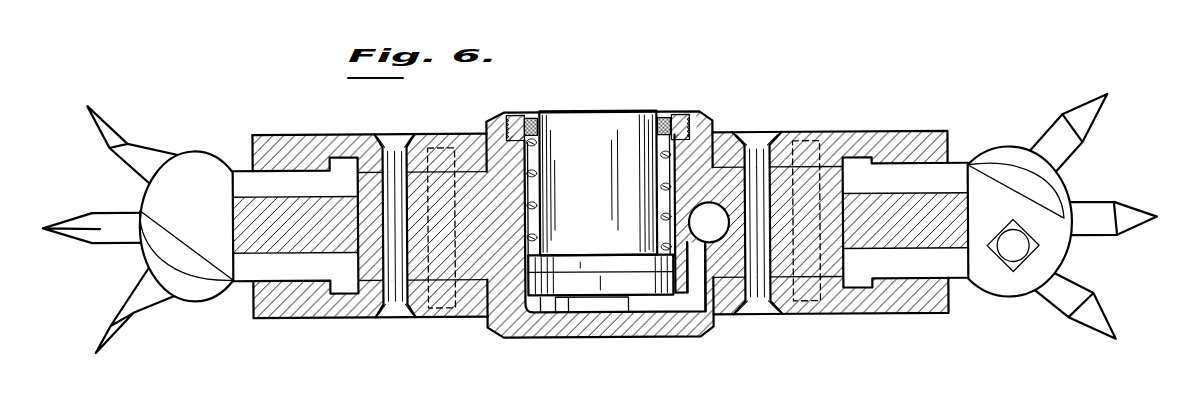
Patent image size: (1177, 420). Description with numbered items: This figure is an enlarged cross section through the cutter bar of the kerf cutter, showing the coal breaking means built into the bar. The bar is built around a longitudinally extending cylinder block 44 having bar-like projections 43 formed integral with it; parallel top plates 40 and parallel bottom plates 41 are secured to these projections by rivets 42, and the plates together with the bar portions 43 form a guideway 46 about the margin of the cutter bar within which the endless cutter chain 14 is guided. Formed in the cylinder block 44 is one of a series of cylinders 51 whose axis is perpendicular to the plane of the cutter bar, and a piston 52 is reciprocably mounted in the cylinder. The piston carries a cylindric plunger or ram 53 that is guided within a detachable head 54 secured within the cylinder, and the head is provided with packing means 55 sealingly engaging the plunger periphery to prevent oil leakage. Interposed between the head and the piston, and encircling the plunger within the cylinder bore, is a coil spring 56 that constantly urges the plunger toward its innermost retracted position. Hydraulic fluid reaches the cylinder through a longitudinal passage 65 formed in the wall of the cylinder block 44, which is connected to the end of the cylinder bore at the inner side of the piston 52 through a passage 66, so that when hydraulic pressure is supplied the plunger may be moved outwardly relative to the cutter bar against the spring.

The endless cutter chain 14 is at (197, 155).
The top plates 40 is at (468, 140).
The bottom plates 41 is at (470, 302).
The rivets 42 is at (390, 158).
The bar-like projections 43 is at (428, 248).
The cylinder block 44 is at (698, 162).
The guideway 46 is at (293, 161).
The cylinder 51 is at (660, 307).
The piston 52 is at (597, 272).
The plunger 53 is at (605, 118).
The detachable head 54 is at (518, 115).
The packing means 55 is at (542, 122).
The coil spring 56 is at (527, 162).
The longitudinal passage 65 is at (715, 225).
The passages 66 is at (695, 290).